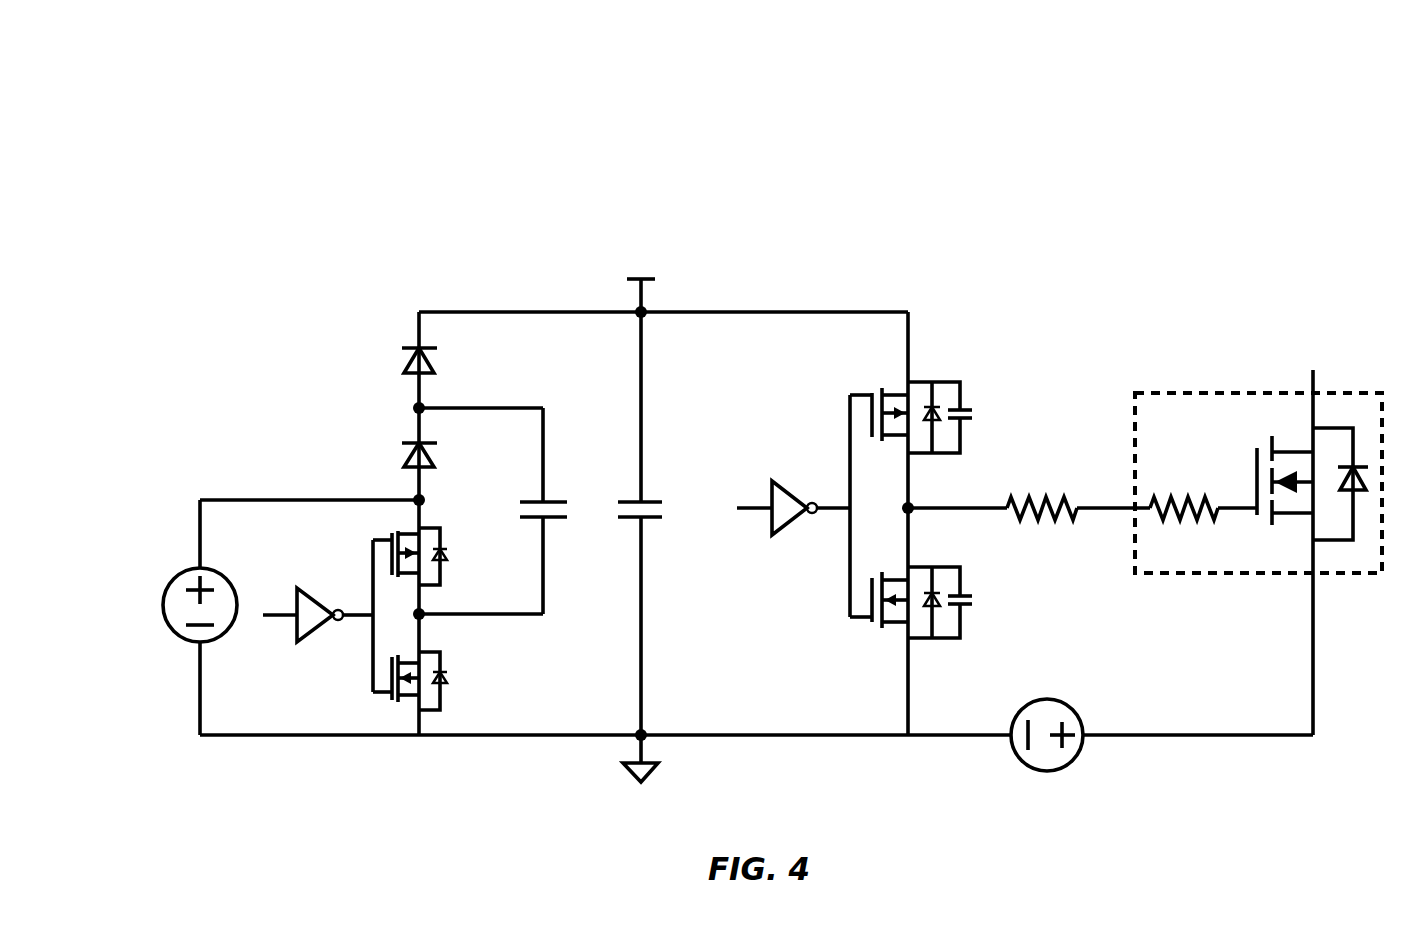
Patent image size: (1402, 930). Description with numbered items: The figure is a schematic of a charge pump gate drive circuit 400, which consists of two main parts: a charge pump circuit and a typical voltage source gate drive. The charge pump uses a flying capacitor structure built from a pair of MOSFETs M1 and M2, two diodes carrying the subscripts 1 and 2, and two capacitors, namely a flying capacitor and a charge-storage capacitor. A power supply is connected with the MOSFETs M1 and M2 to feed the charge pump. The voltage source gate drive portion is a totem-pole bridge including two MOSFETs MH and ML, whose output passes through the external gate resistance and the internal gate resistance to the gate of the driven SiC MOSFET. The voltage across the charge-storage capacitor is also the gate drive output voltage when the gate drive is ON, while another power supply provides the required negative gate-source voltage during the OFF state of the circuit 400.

The charge pump gate drive circuit 400 is at (200, 174).
The diode D1 1 is at (390, 369).
The diode D2 2 is at (390, 464).
The MOSFET M1 is at (443, 556).
The MOSFET M2 is at (443, 681).
The MOSFET MH is at (949, 417).
The MOSFET ML is at (947, 610).